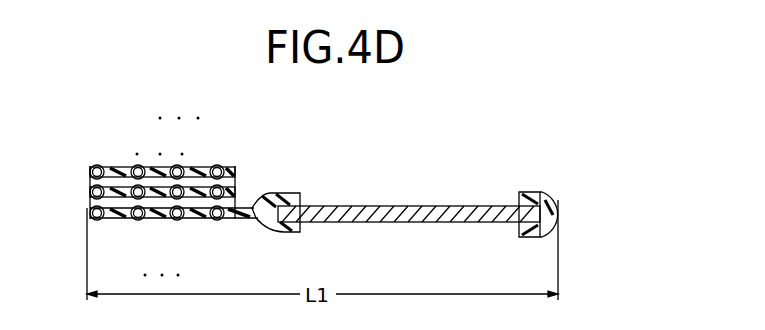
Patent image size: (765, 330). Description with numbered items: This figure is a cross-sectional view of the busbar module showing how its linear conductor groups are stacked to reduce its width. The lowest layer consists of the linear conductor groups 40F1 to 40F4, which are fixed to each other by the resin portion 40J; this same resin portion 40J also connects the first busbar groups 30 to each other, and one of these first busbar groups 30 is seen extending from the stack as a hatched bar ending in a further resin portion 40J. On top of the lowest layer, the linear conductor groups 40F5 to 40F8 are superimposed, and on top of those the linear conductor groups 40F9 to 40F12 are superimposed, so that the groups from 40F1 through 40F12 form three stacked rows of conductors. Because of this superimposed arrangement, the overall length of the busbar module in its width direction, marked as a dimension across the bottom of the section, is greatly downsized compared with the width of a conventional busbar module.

The linear conductor group 40F1 is at (218, 221).
The linear conductor group 40F4 is at (98, 221).
The linear conductor group 40F5 is at (222, 189).
The linear conductor group 40F8 is at (92, 188).
The linear conductor group 40F9 is at (219, 166).
The linear conductor group 40F12 is at (98, 166).
The resin portion 40J is at (291, 193).
The first busbar group 30 is at (407, 206).